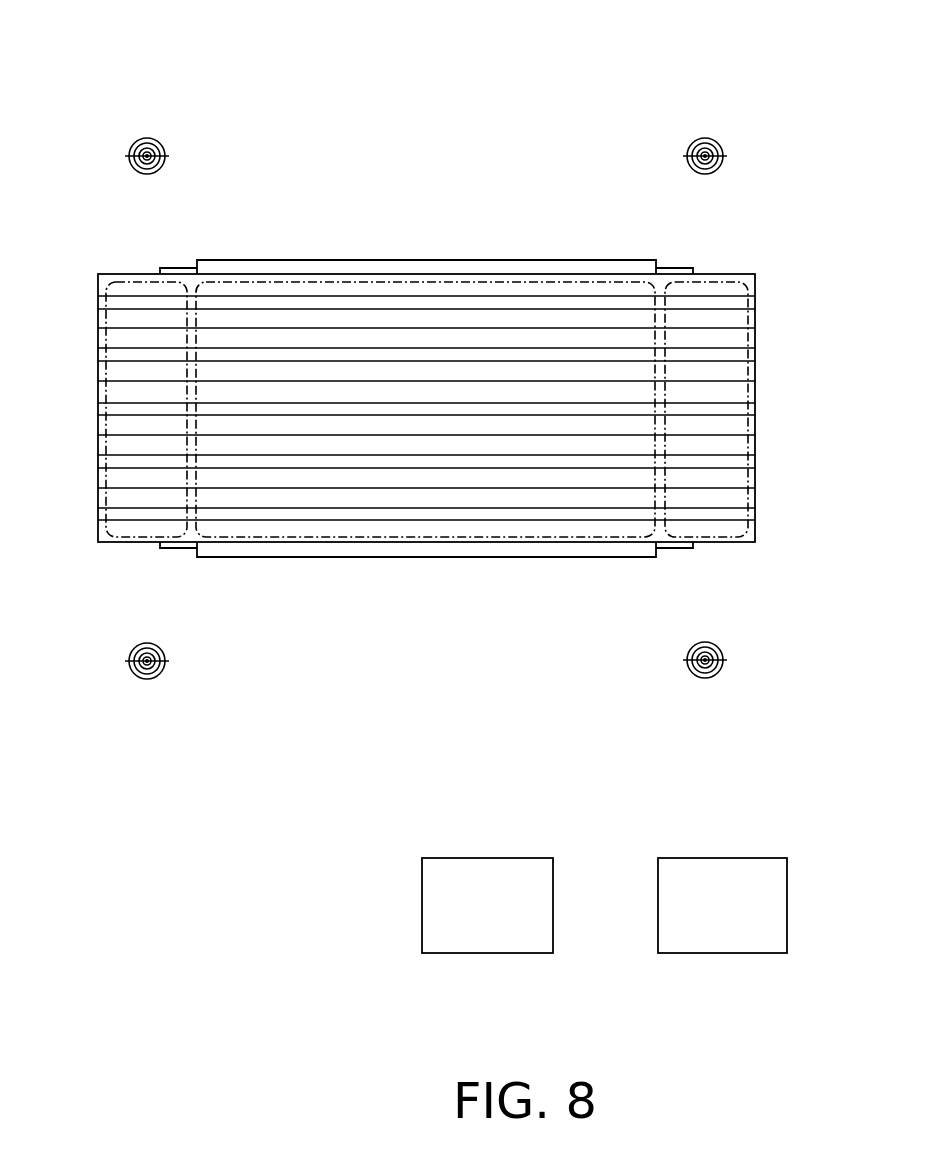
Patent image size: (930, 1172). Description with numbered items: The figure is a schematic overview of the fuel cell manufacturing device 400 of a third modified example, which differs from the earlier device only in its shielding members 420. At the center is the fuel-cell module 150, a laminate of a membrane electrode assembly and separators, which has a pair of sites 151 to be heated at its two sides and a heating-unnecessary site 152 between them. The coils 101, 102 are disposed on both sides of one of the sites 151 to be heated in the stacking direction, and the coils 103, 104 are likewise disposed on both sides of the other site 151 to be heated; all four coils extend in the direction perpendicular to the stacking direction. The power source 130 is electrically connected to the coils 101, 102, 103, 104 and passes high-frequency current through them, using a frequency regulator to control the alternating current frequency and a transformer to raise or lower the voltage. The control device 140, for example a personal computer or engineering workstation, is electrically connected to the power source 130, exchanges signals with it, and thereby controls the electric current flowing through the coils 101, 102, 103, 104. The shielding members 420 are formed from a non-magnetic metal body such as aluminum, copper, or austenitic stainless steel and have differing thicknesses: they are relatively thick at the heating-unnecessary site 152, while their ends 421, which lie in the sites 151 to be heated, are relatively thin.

The fuel cell manufacturing device 400 is at (77, 28).
The coil 101 is at (135, 142).
The coil 102 is at (135, 679).
The coil 103 is at (716, 142).
The coil 104 is at (716, 677).
The power source 130 is at (483, 866).
The control device 140 is at (720, 866).
The fuel-cell module 150 is at (423, 411).
The site to be heated 151 is at (98, 442).
The heating-unnecessary site 152 is at (348, 276).
The shielding member 420 is at (483, 265).
The end 421 is at (160, 268).